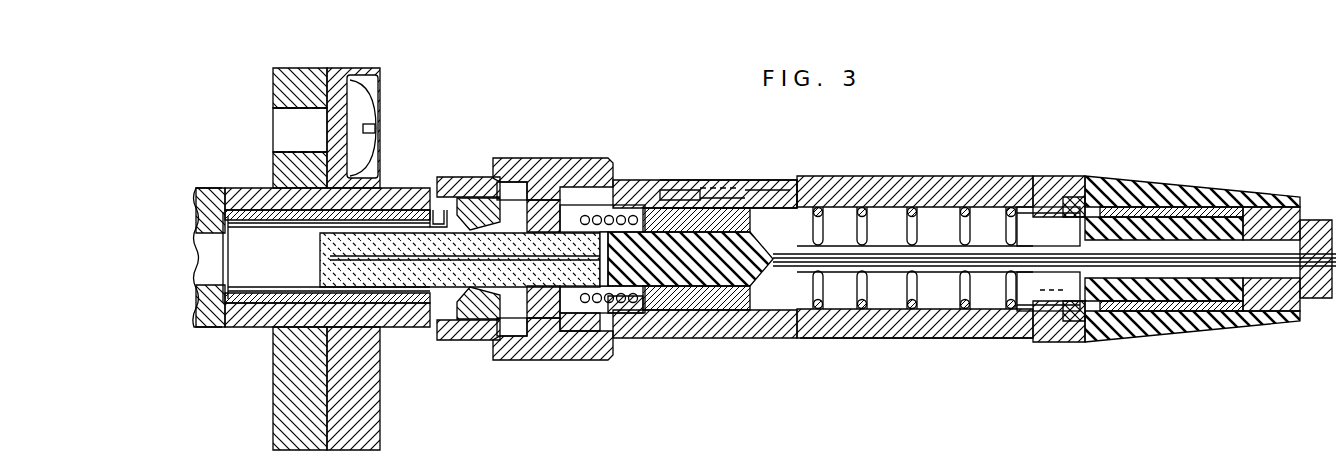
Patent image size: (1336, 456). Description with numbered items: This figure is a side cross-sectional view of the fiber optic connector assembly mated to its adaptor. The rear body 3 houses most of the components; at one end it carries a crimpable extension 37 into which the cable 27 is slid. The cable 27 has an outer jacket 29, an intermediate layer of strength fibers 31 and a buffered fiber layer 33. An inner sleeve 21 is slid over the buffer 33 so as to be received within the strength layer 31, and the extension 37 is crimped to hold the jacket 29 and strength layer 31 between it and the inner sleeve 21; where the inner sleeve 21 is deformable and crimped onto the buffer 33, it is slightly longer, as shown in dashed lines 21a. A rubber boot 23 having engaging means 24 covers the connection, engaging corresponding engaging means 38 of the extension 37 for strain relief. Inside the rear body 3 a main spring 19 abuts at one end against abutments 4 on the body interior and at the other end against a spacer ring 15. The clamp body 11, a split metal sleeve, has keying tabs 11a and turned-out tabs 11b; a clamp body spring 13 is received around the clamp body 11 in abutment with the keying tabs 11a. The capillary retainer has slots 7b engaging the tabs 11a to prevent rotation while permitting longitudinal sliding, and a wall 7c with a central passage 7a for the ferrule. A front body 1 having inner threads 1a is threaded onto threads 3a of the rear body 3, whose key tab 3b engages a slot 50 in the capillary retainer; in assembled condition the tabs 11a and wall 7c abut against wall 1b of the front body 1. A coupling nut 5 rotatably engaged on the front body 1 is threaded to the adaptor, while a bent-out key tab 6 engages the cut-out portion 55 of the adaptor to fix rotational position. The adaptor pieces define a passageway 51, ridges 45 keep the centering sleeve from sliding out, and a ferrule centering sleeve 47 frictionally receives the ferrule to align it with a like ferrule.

The front body 1 is at (712, 187).
The inner threads 1a is at (770, 186).
The wall 1b is at (530, 200).
The rear body 3 is at (893, 177).
The threads 3a is at (783, 190).
The key tab 3b is at (700, 190).
The abutments 4 is at (1012, 208).
The coupling nut 5 is at (590, 158).
The key tab 6 is at (478, 222).
The passage 7a is at (528, 286).
The slots 7b is at (555, 210).
The wall 7c is at (545, 312).
The clamp body 11 is at (688, 238).
The keying tabs 11a is at (613, 183).
The turned out tabs 11b is at (757, 306).
The clamp body spring 13 is at (626, 318).
The spacer ring 15 is at (815, 206).
The main spring 19 is at (880, 312).
The inner sleeve 21 is at (1115, 290).
The dashed lines 21a is at (1050, 290).
The boot 23 is at (1160, 180).
The engaging means 24 is at (1045, 190).
The cable 27 is at (1305, 222).
The outer jacket 29 is at (1288, 292).
The strength fibers 31 is at (1258, 268).
The buffered fiber layer 33 is at (990, 264).
The crimpable extension 37 is at (1180, 216).
The engaging means 38 is at (1070, 200).
The ridges 45 is at (437, 208).
The ferrule centering sleeve 47 is at (385, 290).
The slot 50 is at (665, 194).
The passageway 51 is at (214, 301).
The cut-out portion 55 is at (480, 196).